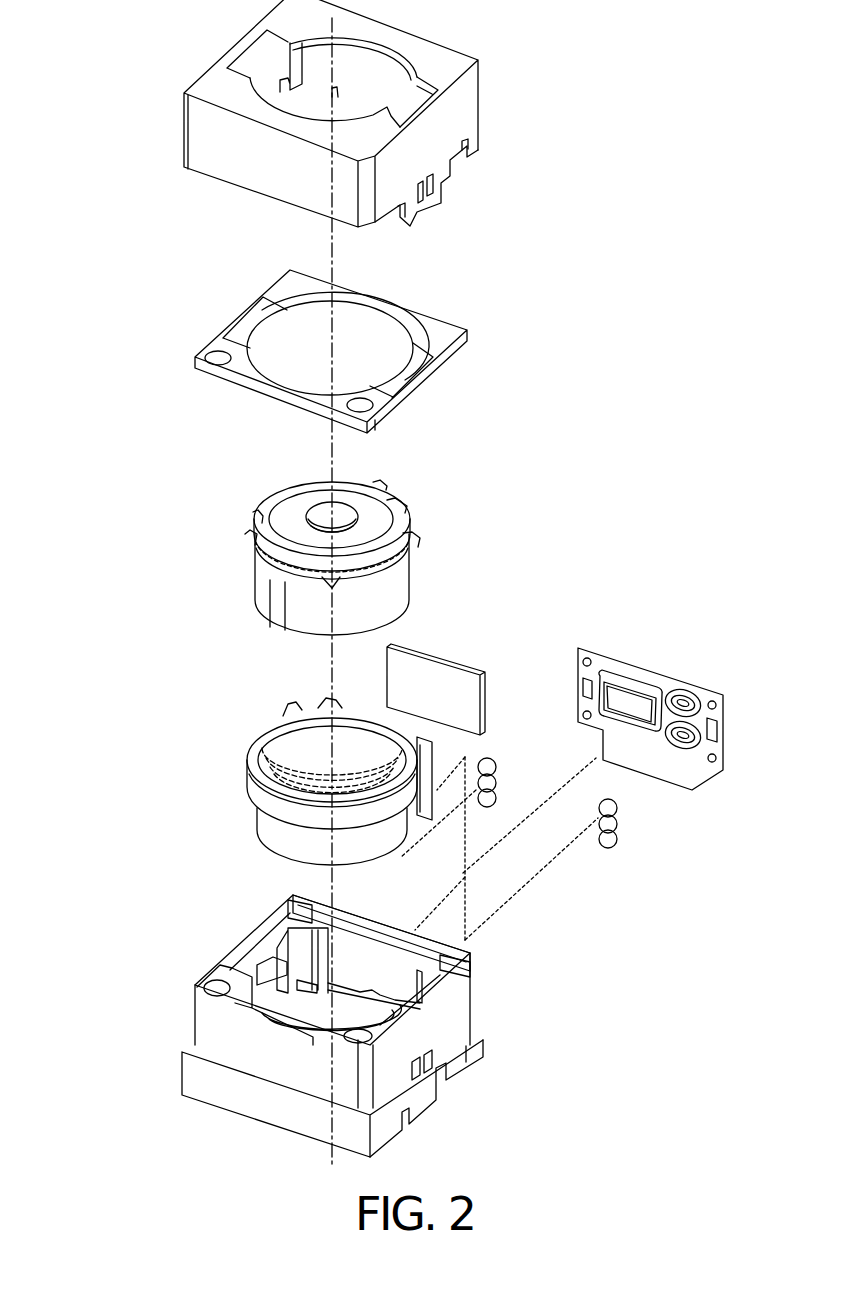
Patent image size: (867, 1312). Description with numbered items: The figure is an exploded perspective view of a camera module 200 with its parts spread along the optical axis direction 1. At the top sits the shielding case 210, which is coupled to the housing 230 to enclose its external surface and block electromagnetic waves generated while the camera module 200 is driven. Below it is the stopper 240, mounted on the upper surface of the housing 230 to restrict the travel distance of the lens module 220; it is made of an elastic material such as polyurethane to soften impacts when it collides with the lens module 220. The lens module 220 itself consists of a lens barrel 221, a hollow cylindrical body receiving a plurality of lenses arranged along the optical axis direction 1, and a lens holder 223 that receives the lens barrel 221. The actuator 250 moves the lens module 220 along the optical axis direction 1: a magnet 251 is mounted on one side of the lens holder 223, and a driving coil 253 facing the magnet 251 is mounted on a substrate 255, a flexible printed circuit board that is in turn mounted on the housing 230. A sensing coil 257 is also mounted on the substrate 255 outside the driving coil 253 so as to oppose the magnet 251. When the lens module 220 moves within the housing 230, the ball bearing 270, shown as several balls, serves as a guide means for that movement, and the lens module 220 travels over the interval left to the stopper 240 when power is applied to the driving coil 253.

The camera module 200 is at (115, 41).
The optical axis direction 1 is at (332, 255).
The shielding case 210 is at (462, 120).
The stopper 240 is at (430, 337).
The lens module 220 is at (140, 582).
The lens barrel 221 is at (263, 590).
The lens holder 223 is at (272, 825).
The actuator 250 is at (749, 604).
The magnet 251 is at (465, 690).
The driving coil 253 is at (603, 660).
The substrate 255 is at (660, 680).
The sensing coil 257 is at (686, 688).
The ball bearing 270 is at (593, 850).
The housing 230 is at (460, 1016).